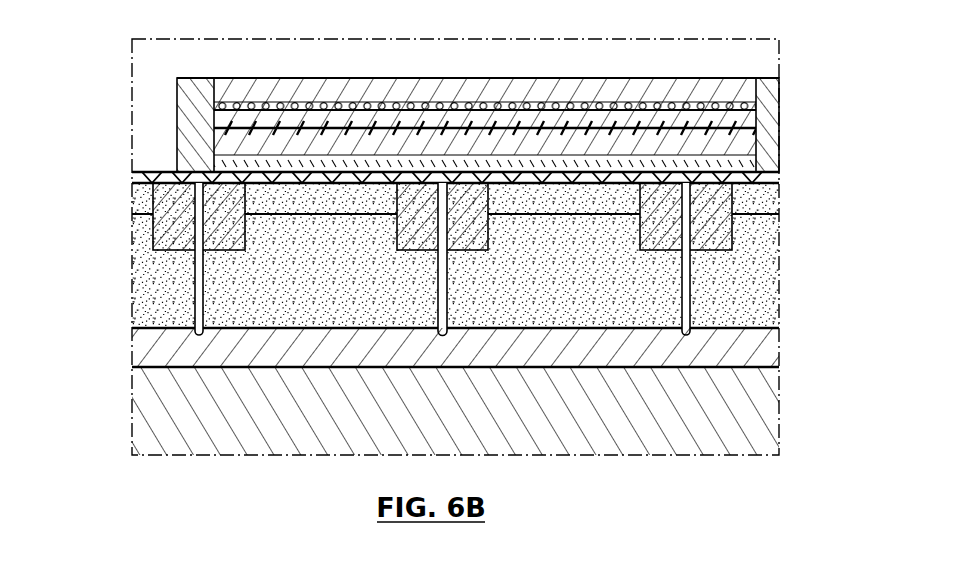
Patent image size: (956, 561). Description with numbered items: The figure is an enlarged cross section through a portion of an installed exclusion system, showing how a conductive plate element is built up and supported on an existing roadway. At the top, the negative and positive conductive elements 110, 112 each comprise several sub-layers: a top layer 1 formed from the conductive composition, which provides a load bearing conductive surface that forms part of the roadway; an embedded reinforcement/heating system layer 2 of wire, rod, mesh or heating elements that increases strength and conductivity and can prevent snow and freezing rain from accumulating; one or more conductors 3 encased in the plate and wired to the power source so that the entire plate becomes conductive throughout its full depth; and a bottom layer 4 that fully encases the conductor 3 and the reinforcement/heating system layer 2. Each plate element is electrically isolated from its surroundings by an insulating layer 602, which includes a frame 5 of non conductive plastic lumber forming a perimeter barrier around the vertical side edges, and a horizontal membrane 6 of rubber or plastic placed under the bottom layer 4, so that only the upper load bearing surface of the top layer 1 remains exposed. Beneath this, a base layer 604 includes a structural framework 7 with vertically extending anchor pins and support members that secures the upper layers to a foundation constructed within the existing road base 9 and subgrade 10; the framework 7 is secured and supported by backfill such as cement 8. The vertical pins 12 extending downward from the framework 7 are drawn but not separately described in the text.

The top layer 1 is at (206, 80).
The reinforcement/heating system layer 2 is at (214, 101).
The conductor 3 is at (214, 124).
The bottom layer 4 is at (214, 152).
The frame 5 is at (197, 162).
The horizontal membrane 6 is at (733, 165).
The structural framework 7 is at (718, 220).
The cement 8 is at (157, 317).
The road base 9 is at (132, 354).
The subgrade 10 is at (145, 417).
The conductive via 12 is at (200, 307).
The negative conductive element 110 is at (119, 153).
The positive conductive element 112 is at (438, 108).
The insulating layer 602 is at (116, 184).
The base layer 604 is at (116, 216).